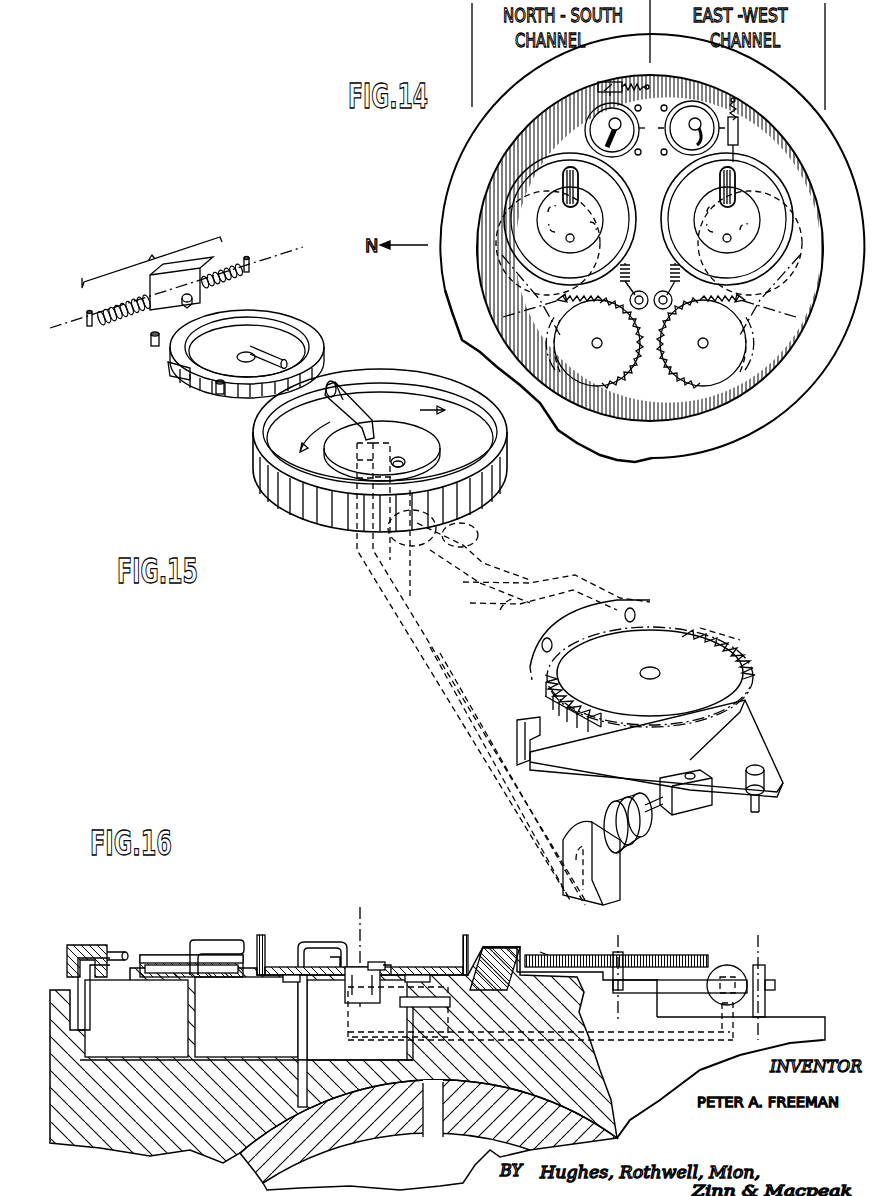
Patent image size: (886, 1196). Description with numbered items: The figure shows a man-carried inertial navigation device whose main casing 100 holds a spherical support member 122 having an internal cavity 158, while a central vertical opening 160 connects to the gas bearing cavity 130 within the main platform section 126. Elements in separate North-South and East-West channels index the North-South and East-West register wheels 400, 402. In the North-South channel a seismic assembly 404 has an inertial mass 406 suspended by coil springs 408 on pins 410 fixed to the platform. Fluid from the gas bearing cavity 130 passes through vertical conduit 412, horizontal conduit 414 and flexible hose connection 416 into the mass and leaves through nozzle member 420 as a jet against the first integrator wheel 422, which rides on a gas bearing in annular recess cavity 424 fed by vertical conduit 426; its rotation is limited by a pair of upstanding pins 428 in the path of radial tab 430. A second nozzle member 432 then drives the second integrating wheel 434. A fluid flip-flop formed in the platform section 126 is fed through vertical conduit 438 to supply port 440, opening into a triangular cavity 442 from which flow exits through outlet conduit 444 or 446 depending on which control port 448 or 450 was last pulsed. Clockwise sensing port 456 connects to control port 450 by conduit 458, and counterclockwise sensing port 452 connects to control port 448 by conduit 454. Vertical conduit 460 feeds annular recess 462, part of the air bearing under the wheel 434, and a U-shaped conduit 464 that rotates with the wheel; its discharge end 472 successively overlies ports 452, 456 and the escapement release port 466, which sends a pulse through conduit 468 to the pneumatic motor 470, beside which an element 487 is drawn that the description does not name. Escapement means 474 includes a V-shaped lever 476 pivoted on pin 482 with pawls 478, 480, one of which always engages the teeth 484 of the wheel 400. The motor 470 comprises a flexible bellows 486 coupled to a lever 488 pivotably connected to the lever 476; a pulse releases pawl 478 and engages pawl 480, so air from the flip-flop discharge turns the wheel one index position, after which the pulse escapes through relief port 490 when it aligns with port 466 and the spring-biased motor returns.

In FIG. 16, the main casing 100 is at (800, 1012).
In FIG. 16, the spherical support member 122 is at (488, 1146).
In FIG. 16, the main platform section 126 is at (124, 1111).
In FIG. 16, the gas bearing cavity 130 is at (310, 1110).
In FIG. 16, the cavity 158 is at (370, 1181).
In FIG. 16, the central vertically oriented opening 160 is at (433, 1133).
In FIG. 14, the North-South register wheel 400 is at (598, 385).
In FIG. 15, the North-South register wheel 400 is at (685, 625).
In FIG. 16, the North-South register wheel 400 is at (660, 953).
In FIG. 14, the East-West register wheel 402 is at (700, 385).
In FIG. 15, the North-South seismic assembly 404 is at (152, 259).
In FIG. 14, the seismic mass 406 is at (616, 82).
In FIG. 15, the seismic mass 406 is at (185, 272).
In FIG. 16, the seismic mass 406 is at (88, 944).
In FIG. 15, the coil springs 408 is at (118, 320).
In FIG. 15, the pins 410 is at (89, 328).
In FIG. 16, the vertical conduit 412 is at (306, 1082).
In FIG. 16, the horizontal conduit 414 is at (232, 1062).
In FIG. 16, the flexible hose connection 416 is at (72, 1000).
In FIG. 15, the nozzle member 420 is at (185, 305).
In FIG. 16, the nozzle member 420 is at (117, 952).
In FIG. 14, the first integrator wheel 422 is at (575, 130).
In FIG. 15, the first integrator wheel 422 is at (310, 325).
In FIG. 16, the first integrator wheel 422 is at (165, 955).
In FIG. 16, the annular recess cavity 424 is at (198, 980).
In FIG. 16, the vertical conduit 426 is at (190, 1030).
In FIG. 15, the pin 428 is at (152, 352).
In FIG. 15, the radial tab 430 is at (180, 380).
In FIG. 15, the second nozzle member 432 is at (300, 352).
In FIG. 16, the second nozzle member 432 is at (218, 940).
In FIG. 14, the second integrator wheel 434 is at (640, 205).
In FIG. 15, the second integrator wheel 434 is at (388, 370).
In FIG. 16, the second integrator wheel 434 is at (272, 933).
In FIG. 16, the vertical conduit 438 is at (417, 1030).
In FIG. 15, the flip-flop supply port 440 is at (470, 545).
In FIG. 16, the flip-flop supply port 440 is at (400, 1010).
In FIG. 15, the triangular shaped cavity 442 is at (446, 573).
In FIG. 16, the triangular shaped cavity 442 is at (470, 975).
In FIG. 15, the outlet conduit 444 is at (540, 585).
In FIG. 16, the outlet conduit 444 is at (517, 948).
In FIG. 15, the outlet conduit 446 is at (504, 614).
In FIG. 15, the control port 448 is at (475, 560).
In FIG. 16, the control port 448 is at (434, 1008).
In FIG. 15, the control port 450 is at (426, 580).
In FIG. 15, the counterclockwise rotation sensing port 452 is at (440, 445).
In FIG. 16, the counterclockwise rotation sensing port 452 is at (348, 996).
In FIG. 15, the conduit means 454 is at (472, 520).
In FIG. 15, the clockwise rotation sensing port 456 is at (360, 492).
In FIG. 15, the conduit 458 is at (412, 560).
In FIG. 16, the vertical conduit 460 is at (300, 1044).
In FIG. 16, the annular recess 462 is at (430, 975).
In FIG. 14, the U-shaped conduit 464 is at (579, 183).
In FIG. 15, the U-shaped conduit 464 is at (350, 392).
In FIG. 16, the U-shaped conduit 464 is at (318, 940).
In FIG. 15, the escapement release port 466 is at (418, 415).
In FIG. 16, the escapement release port 466 is at (370, 965).
In FIG. 15, the conduit 468 is at (470, 755).
In FIG. 16, the conduit 468 is at (496, 1032).
In FIG. 15, the pneumatic motor 470 is at (635, 862).
In FIG. 16, the pneumatic motor 470 is at (730, 965).
In FIG. 16, the pipe discharge port 472 is at (362, 935).
In FIG. 15, the escapement means 474 is at (735, 816).
In FIG. 14, the V-shaped lever 476 is at (640, 290).
In FIG. 15, the V-shaped lever 476 is at (775, 738).
In FIG. 16, the V-shaped lever 476 is at (670, 995).
In FIG. 15, the pawl 478 is at (737, 640).
In FIG. 15, the pawl 480 is at (530, 722).
In FIG. 16, the pawl 480 is at (622, 955).
In FIG. 15, the pin 482 is at (765, 820).
In FIG. 16, the pin 482 is at (767, 995).
In FIG. 16, the ratchet teeth 484 is at (572, 958).
In FIG. 15, the flexible bellows 486 is at (636, 615).
In FIG. 16, the flexible bellows 486 is at (540, 952).
In FIG. 15, the block 487 is at (612, 895).
In FIG. 15, the lever 488 is at (560, 652).
In FIG. 14, the relief port 490 is at (741, 128).
In FIG. 15, the relief port 490 is at (402, 458).
In FIG. 16, the relief port 490 is at (386, 968).